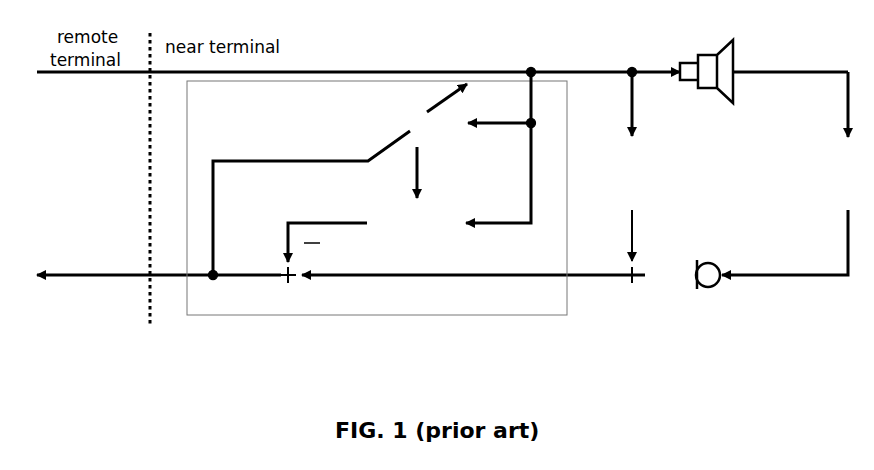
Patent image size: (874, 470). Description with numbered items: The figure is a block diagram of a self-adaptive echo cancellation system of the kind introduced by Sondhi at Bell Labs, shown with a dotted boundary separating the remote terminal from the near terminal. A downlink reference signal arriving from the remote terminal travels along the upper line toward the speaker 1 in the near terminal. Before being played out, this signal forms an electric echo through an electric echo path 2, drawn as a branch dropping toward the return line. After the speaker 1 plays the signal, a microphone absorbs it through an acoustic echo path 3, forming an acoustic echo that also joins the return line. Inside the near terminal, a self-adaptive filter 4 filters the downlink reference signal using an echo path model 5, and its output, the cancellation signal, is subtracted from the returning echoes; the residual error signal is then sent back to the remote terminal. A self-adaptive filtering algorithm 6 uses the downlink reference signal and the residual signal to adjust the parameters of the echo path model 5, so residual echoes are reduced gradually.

The speaker 1 is at (736, 54).
The electric echo path 2 is at (631, 166).
The acoustic echo path 3 is at (774, 180).
The self-adaptive filter 4 is at (568, 106).
The echo path model 5 is at (415, 190).
The self-adaptive filtering algorithm 6 is at (447, 113).